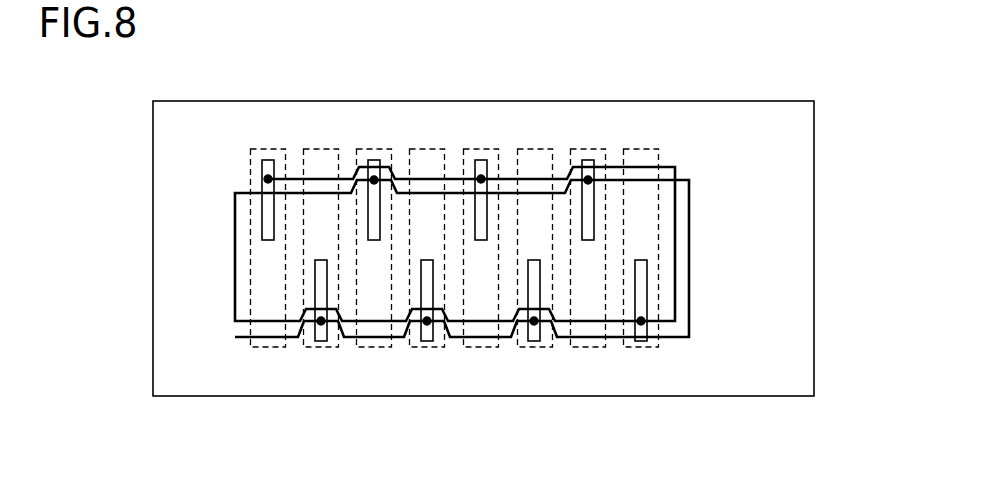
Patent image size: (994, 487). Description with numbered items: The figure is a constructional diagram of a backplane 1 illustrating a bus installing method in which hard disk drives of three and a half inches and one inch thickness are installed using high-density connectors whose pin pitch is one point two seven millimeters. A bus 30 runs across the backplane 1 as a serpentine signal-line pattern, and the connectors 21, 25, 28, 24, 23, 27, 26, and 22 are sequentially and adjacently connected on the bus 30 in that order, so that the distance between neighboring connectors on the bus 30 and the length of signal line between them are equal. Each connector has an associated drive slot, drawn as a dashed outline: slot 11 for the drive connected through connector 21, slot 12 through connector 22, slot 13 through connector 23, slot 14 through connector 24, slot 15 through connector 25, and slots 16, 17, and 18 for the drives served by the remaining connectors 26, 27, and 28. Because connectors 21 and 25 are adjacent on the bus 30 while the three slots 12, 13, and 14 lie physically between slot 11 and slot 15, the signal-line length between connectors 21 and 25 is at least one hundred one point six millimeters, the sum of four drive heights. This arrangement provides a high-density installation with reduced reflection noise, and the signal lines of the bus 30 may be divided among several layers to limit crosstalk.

The substrate / circuit board 1 is at (814, 336).
The coil conductor pattern 30 is at (689, 248).
The slot 11 is at (268, 347).
The slot 12 is at (321, 149).
The slot 13 is at (374, 347).
The slot 14 is at (427, 149).
The slot 15 is at (481, 347).
The electrode region 16 is at (535, 149).
The electrode region 17 is at (588, 347).
The electrode region 18 is at (641, 149).
The connector 21 is at (268, 160).
The connector 22 is at (322, 341).
The connector 23 is at (374, 160).
The connector 24 is at (428, 341).
The connector 25 is at (481, 160).
The connector 26 is at (535, 341).
The connector 27 is at (588, 160).
The connector 28 is at (642, 341).